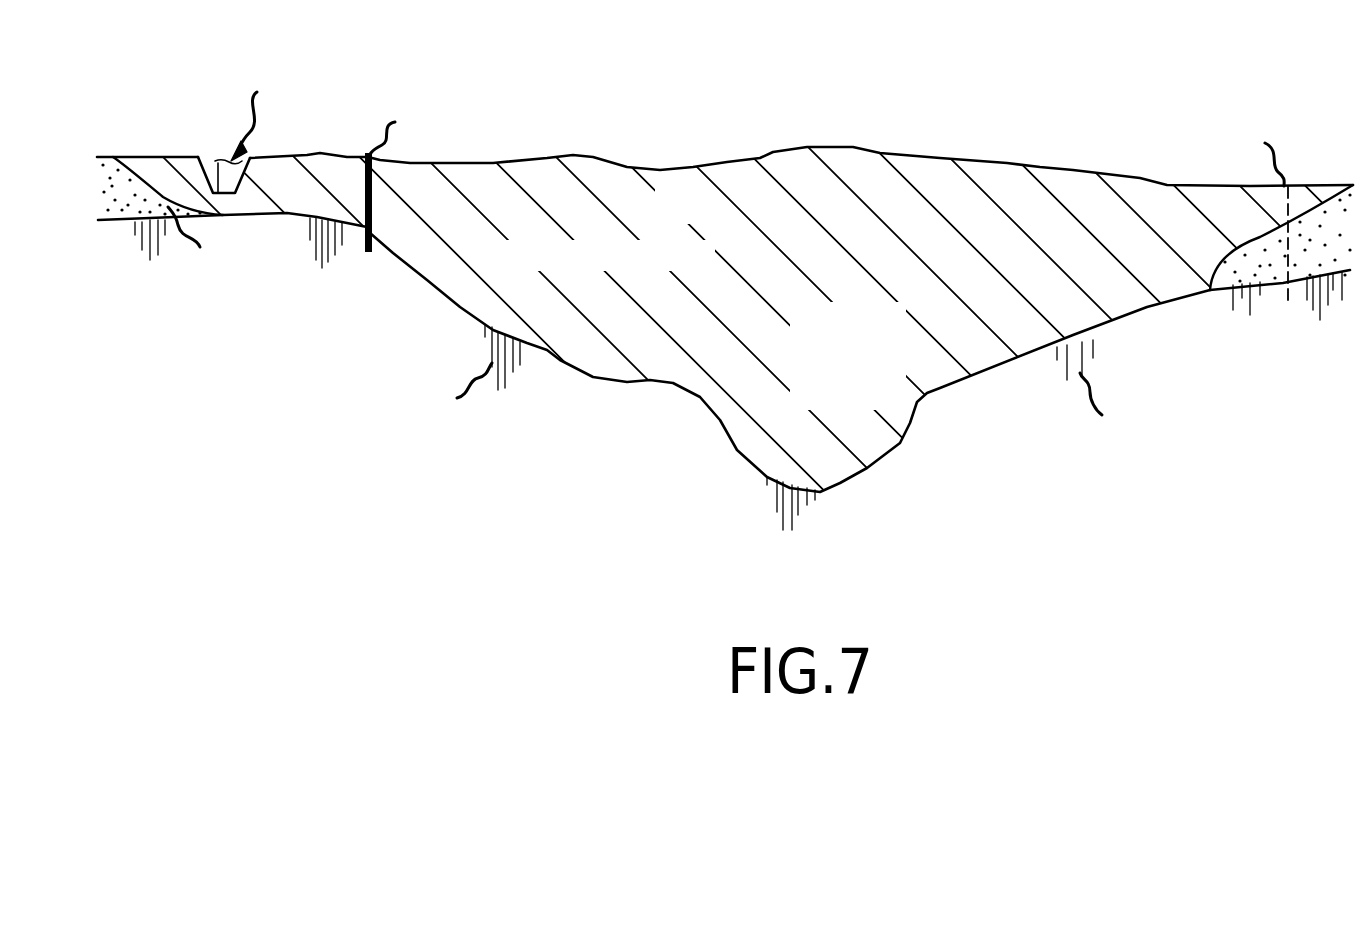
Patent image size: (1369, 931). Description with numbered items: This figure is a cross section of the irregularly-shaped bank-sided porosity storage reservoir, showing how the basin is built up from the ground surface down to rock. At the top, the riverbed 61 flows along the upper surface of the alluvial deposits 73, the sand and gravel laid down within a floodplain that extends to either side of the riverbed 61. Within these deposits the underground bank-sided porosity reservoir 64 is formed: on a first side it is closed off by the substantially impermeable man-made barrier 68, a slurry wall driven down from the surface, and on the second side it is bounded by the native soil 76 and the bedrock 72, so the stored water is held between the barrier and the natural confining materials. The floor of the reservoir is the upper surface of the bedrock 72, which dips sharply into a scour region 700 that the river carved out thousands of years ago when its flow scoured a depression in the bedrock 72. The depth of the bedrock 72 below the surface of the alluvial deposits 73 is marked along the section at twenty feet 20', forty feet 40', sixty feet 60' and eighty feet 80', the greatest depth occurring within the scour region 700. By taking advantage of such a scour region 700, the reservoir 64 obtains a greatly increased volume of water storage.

The riverbed 61 is at (216, 166).
The bank-sided porosity reservoir 64 is at (690, 221).
The substantially impermeable man-made barrier 68 is at (367, 253).
The bedrock 72 is at (400, 459).
The alluvial deposits 73 is at (553, 350).
The native soil 76 is at (100, 217).
The scour region 700 is at (870, 406).
The depth of 20 feet 20' is at (292, 249).
The depth of 40 feet 40' is at (787, 340).
The depth of 60 feet 60' is at (802, 417).
The depth of 80 feet 80' is at (817, 465).